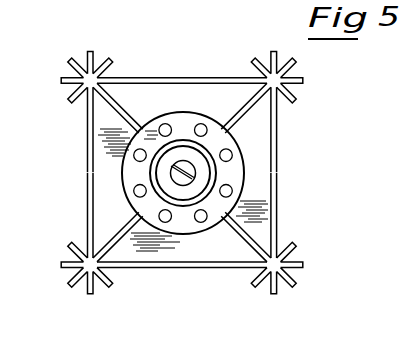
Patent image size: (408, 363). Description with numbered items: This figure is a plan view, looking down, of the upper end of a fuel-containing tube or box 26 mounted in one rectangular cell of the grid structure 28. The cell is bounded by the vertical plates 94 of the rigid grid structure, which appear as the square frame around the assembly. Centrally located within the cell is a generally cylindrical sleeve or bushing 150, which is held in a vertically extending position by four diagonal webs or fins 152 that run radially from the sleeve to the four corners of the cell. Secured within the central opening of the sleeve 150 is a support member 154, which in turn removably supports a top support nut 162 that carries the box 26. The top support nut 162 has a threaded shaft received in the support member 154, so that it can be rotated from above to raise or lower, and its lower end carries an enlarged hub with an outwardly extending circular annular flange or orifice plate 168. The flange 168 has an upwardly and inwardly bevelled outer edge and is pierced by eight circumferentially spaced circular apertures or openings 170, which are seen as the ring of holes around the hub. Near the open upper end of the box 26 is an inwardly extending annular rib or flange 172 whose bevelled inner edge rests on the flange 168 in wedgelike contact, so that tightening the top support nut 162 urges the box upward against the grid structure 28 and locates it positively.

The fuel-containing tube or box 26 is at (266, 177).
The grid structure 28 is at (128, 78).
The vertical plates 94 is at (87, 153).
The sleeve or bushing 150 is at (238, 145).
The diagonal webs or fins 152 is at (108, 100).
The support member 154 is at (151, 171).
The top support nut 162 is at (182, 161).
The flange or orifice plate 168 is at (177, 225).
The circular apertures or openings 170 is at (134, 193).
The annular rib or flange 172 is at (212, 101).